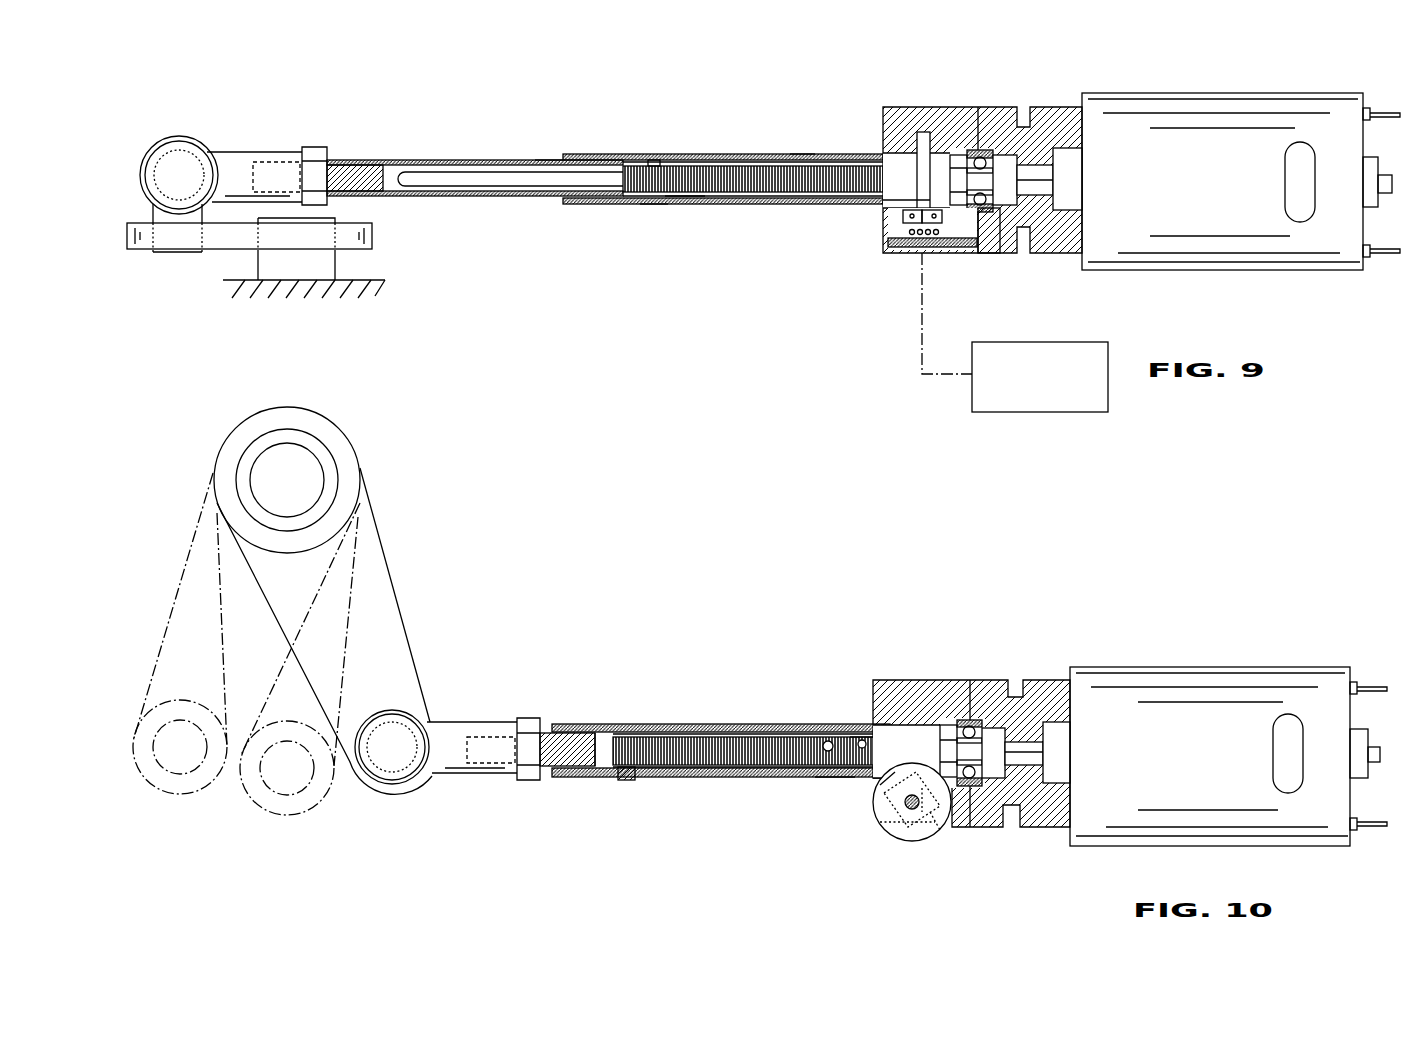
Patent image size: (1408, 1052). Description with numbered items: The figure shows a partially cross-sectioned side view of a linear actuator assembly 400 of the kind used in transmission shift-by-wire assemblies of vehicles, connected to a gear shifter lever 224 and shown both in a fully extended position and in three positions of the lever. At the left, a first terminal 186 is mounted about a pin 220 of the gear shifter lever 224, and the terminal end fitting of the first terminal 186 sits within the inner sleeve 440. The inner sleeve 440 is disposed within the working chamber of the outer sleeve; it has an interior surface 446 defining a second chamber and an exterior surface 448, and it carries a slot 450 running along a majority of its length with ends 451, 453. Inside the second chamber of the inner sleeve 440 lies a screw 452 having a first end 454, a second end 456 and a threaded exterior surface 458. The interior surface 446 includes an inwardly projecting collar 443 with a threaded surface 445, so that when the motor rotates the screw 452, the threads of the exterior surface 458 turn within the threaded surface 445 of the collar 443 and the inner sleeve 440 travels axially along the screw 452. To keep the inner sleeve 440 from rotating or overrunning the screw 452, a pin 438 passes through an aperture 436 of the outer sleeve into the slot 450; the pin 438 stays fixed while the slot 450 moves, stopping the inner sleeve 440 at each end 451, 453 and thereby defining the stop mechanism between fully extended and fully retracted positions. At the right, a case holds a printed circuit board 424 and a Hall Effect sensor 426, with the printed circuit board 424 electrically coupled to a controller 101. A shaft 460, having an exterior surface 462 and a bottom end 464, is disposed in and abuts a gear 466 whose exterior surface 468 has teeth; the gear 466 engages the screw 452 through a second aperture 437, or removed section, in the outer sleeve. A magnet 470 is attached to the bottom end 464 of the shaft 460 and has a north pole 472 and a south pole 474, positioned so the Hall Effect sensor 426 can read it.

In FIG. 9, the controller 101 is at (1018, 412).
In FIG. 9, the first terminal 186 is at (195, 160).
In FIG. 10, the first terminal 186 is at (415, 712).
In FIG. 9, the pin 220 is at (176, 148).
In FIG. 10, the pin 220 is at (277, 790).
In FIG. 9, the gear shifter lever 224 is at (225, 245).
In FIG. 10, the gear shifter lever 224 is at (404, 610).
In FIG. 9, the linear actuator assembly 400 is at (1106, 62).
In FIG. 10, the linear actuator assembly 400 is at (1104, 630).
In FIG. 9, the printed circuit board 424 is at (918, 255).
In FIG. 9, the Hall Effect sensor 426 is at (948, 247).
In FIG. 9, the aperture 436 is at (655, 205).
In FIG. 10, the second aperture 437 is at (892, 737).
In FIG. 9, the pin 438 is at (655, 160).
In FIG. 10, the pin 438 is at (630, 782).
In FIG. 9, the inner sleeve 440 is at (458, 165).
In FIG. 10, the inner sleeve 440 is at (547, 772).
In FIG. 10, the inwardly projecting collar 443 is at (820, 738).
In FIG. 10, the threaded surface 445 is at (862, 740).
In FIG. 9, the interior surface 446 is at (553, 160).
In FIG. 9, the exterior surface 448 is at (522, 158).
In FIG. 9, the slot 450 is at (447, 178).
In FIG. 9, the end of slot 451 is at (685, 200).
In FIG. 10, the end of slot 451 is at (835, 777).
In FIG. 9, the screw 452 is at (743, 166).
In FIG. 10, the screw 452 is at (688, 737).
In FIG. 9, the end of slot 453 is at (402, 166).
In FIG. 10, the end of slot 453 is at (612, 777).
In FIG. 9, the first end 454 is at (893, 170).
In FIG. 10, the first end 454 is at (947, 750).
In FIG. 9, the second end 456 is at (628, 154).
In FIG. 10, the second end 456 is at (612, 727).
In FIG. 9, the exterior surface 458 is at (800, 154).
In FIG. 9, the shaft 460 is at (925, 140).
In FIG. 9, the exterior surface 462 is at (895, 200).
In FIG. 9, the bottom end 464 is at (905, 225).
In FIG. 10, the bottom end 464 is at (888, 815).
In FIG. 10, the gear 466 is at (918, 838).
In FIG. 9, the exterior surface 468 is at (952, 175).
In FIG. 10, the exterior surface 468 is at (1005, 753).
In FIG. 9, the magnet 470 is at (985, 245).
In FIG. 10, the magnet 470 is at (915, 810).
In FIG. 10, the north pole 472 is at (870, 790).
In FIG. 10, the south pole 474 is at (935, 830).